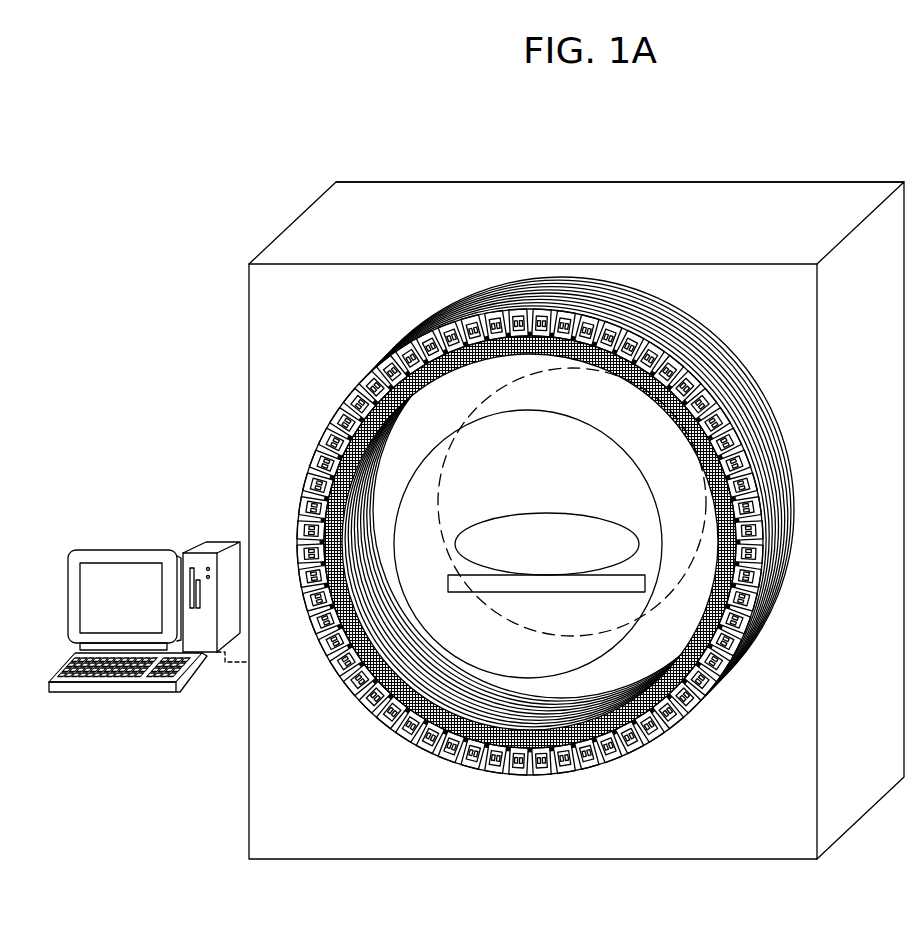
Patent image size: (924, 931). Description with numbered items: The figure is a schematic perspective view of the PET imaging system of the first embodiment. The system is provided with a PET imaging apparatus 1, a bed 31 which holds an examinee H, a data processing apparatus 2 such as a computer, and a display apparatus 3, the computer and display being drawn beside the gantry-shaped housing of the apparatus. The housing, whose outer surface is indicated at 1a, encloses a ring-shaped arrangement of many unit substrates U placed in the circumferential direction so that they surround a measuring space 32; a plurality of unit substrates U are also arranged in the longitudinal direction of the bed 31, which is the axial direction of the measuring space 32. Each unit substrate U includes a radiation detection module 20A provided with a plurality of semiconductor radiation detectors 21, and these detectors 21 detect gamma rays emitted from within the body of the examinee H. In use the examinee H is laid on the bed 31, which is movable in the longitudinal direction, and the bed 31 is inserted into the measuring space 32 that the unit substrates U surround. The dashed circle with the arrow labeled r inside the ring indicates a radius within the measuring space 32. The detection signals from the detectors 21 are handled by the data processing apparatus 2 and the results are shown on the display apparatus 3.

The PET imaging apparatus 1 is at (573, 171).
The housing 1a is at (414, 202).
The data processing apparatus 2 is at (203, 552).
The display apparatus 3 is at (110, 553).
The semiconductor radiation detectors 21 is at (385, 357).
The unit substrate U is at (319, 420).
The radiation detection module 20A is at (467, 377).
The radius of field of view r is at (546, 530).
The bed 31 is at (507, 583).
The measuring space 32 is at (538, 656).
The examinee H is at (456, 548).